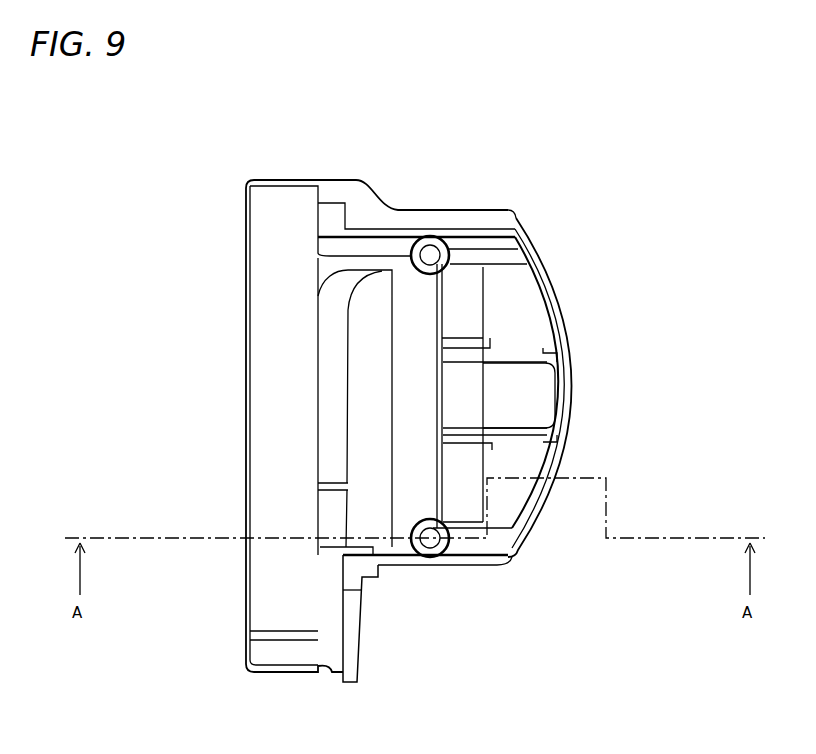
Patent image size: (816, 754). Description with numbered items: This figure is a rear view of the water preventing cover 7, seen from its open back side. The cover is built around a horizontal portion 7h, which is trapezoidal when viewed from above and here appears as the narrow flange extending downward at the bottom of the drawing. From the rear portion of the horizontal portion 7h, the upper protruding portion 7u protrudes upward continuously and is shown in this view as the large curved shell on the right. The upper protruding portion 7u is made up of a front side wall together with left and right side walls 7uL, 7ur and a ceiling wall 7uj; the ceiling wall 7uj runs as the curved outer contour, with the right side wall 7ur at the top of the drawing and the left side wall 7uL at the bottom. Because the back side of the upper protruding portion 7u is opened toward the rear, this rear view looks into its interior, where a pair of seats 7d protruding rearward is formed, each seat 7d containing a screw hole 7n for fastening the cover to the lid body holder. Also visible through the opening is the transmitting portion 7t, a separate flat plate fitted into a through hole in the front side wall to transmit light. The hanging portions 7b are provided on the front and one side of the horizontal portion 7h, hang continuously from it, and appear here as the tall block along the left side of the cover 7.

The water preventing cover 7 is at (613, 148).
The hanging portion 7b is at (270, 178).
The screw hole 7n is at (430, 255).
The seat 7d is at (447, 240).
The right side wall 7ur is at (488, 210).
The upper protruding portion 7u is at (553, 297).
The ceiling wall 7uj is at (560, 312).
The transmitting portion 7t is at (535, 394).
The left side wall 7uL is at (488, 571).
The horizontal portion 7h is at (363, 640).